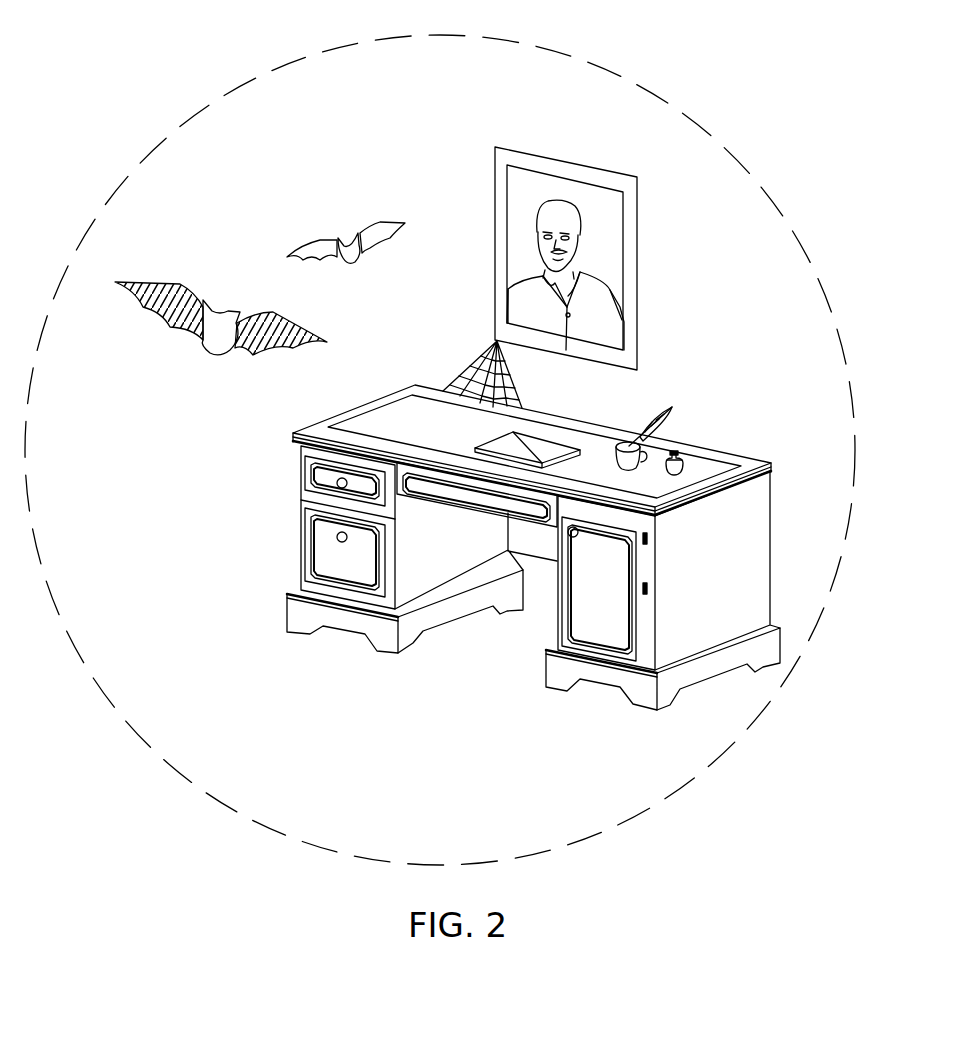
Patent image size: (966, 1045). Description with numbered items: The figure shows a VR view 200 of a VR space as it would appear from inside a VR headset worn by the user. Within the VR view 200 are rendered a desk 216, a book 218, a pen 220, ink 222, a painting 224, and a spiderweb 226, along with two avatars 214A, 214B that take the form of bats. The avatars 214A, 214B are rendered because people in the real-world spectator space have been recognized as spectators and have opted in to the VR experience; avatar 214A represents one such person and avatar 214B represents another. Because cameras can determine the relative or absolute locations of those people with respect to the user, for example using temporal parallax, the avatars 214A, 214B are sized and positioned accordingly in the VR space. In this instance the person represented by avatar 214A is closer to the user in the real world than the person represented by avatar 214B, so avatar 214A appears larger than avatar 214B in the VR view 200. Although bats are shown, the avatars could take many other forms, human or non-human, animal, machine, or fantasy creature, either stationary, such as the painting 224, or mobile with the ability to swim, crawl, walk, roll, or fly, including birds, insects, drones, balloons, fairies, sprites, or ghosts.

The VR view 200 is at (817, 100).
The avatar 214A is at (187, 332).
The avatar 214B is at (350, 232).
The desk 216 is at (771, 488).
The book 218 is at (558, 438).
The pen 220 is at (673, 408).
The ink 222 is at (685, 465).
The painting 224 is at (637, 272).
The spiderweb 226 is at (488, 372).